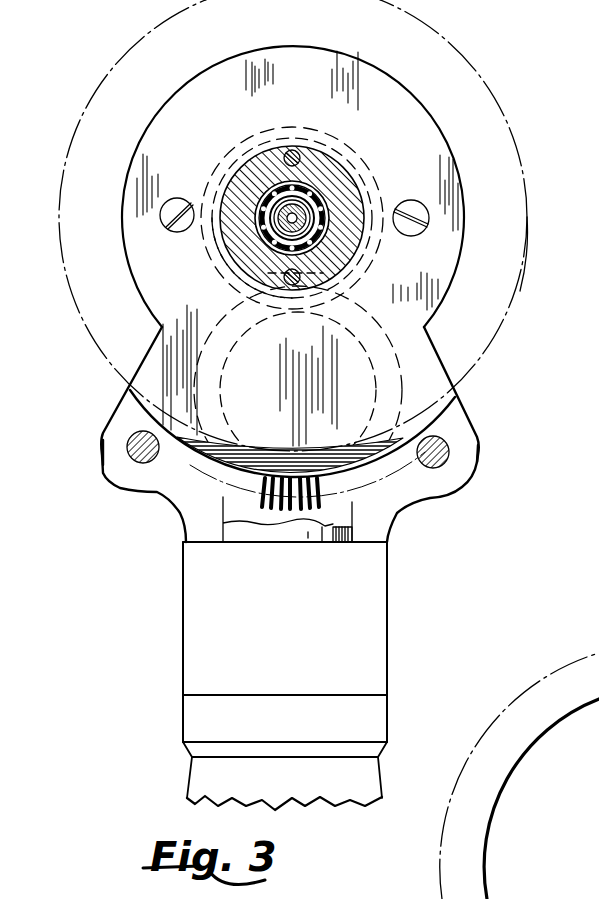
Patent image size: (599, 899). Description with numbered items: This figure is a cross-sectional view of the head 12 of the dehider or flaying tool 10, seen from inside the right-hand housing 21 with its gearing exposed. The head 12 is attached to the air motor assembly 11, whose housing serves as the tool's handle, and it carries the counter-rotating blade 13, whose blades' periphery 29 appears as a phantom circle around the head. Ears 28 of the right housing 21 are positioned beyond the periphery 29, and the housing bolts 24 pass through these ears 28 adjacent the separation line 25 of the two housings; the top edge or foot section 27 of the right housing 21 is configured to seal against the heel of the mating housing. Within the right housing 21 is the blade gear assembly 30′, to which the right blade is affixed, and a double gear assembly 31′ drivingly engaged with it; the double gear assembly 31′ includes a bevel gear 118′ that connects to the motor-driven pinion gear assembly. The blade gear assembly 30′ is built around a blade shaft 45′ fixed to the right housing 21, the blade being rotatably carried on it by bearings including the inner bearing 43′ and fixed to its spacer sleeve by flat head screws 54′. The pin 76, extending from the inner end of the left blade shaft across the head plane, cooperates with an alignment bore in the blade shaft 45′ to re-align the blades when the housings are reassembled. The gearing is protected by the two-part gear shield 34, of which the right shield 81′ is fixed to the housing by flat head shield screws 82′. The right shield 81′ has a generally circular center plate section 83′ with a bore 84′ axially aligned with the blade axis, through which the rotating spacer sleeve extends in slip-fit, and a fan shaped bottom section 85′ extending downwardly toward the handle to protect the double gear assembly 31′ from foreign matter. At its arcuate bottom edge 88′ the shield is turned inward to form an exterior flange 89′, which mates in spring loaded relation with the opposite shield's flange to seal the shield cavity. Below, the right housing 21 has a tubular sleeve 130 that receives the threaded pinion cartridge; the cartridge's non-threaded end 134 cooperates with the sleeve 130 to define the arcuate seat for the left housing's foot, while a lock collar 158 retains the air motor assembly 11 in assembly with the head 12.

The dehider or flaying tool 10 is at (88, 633).
The air motor assembly 11 is at (380, 792).
The head 12 is at (498, 57).
The blade 13 is at (514, 135).
The right-hand housing 21 is at (482, 446).
The housing bolts 24 is at (137, 458).
The separation line 25 is at (367, 545).
The foot section 27 is at (237, 550).
The ears 28 is at (105, 450).
The blades' periphery 29 is at (527, 242).
The blade gear assembly 30′ is at (352, 151).
The double gear assembly 31′ is at (385, 354).
The gear shield 34 is at (444, 261).
The inner bearing 43′ is at (314, 209).
The blade shaft 45′ is at (300, 225).
The flat head screws 54′ is at (293, 150).
The pin 76 is at (291, 219).
The right shield 81′ is at (446, 296).
The flat head shield screws 82′ is at (178, 200).
The center plate section 83′ is at (283, 82).
The bore 84′ is at (256, 275).
The fan shaped bottom section 85′ is at (317, 386).
The bottom edge 88′ is at (232, 488).
The exterior flange 89′ is at (238, 527).
The bevel gear 118′ is at (383, 500).
The tubular sleeve 130 is at (285, 642).
The non-threaded end 134 is at (355, 538).
The lock collar 158 is at (368, 722).